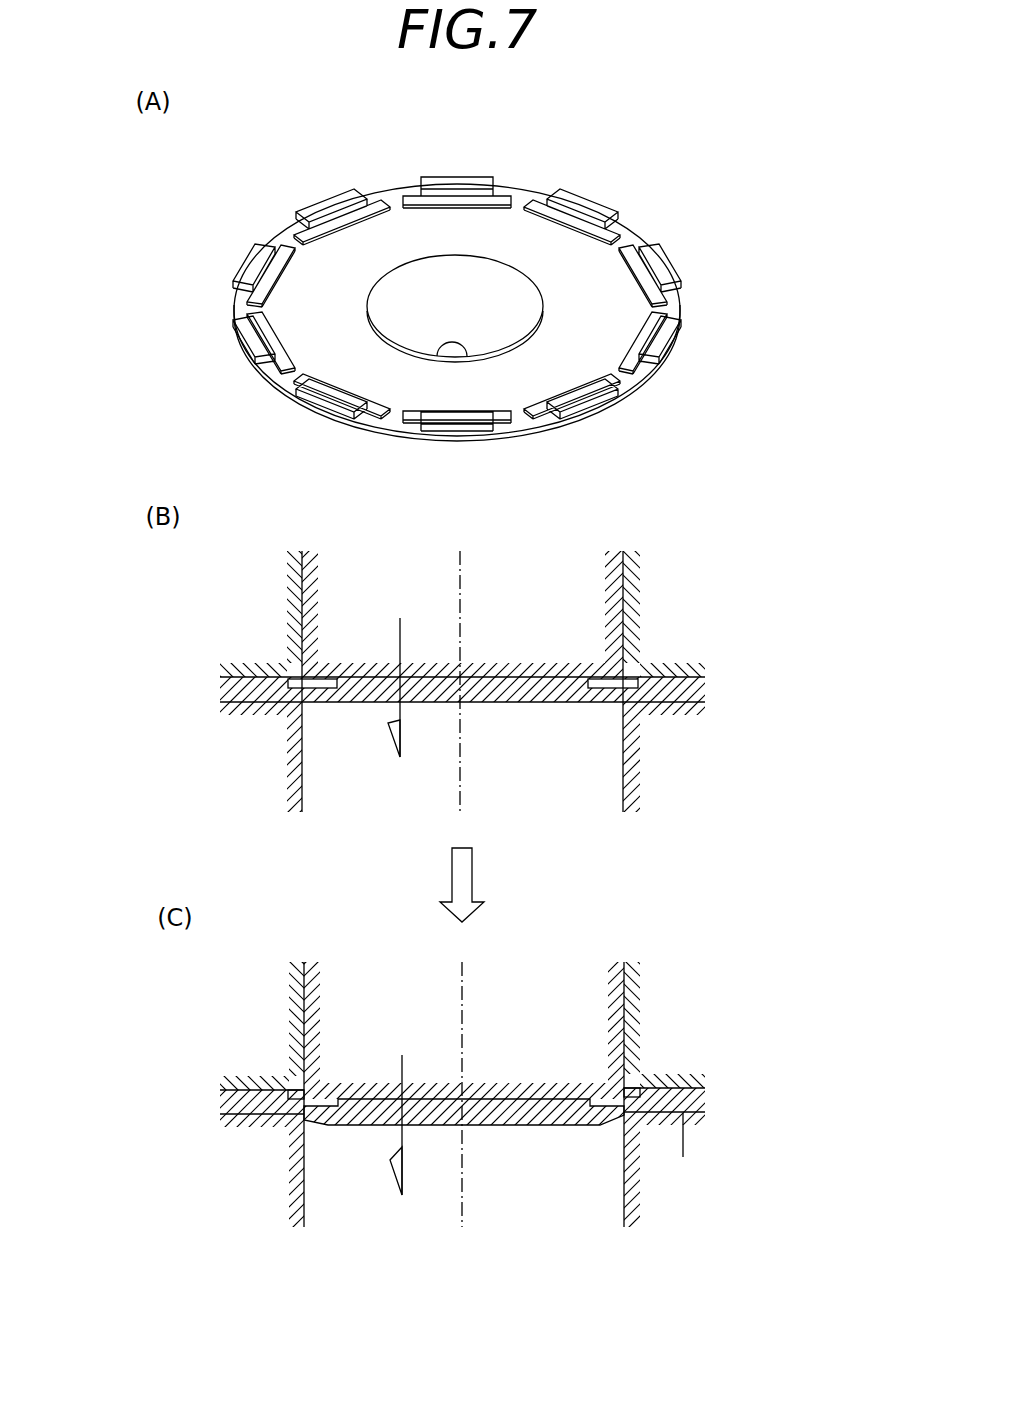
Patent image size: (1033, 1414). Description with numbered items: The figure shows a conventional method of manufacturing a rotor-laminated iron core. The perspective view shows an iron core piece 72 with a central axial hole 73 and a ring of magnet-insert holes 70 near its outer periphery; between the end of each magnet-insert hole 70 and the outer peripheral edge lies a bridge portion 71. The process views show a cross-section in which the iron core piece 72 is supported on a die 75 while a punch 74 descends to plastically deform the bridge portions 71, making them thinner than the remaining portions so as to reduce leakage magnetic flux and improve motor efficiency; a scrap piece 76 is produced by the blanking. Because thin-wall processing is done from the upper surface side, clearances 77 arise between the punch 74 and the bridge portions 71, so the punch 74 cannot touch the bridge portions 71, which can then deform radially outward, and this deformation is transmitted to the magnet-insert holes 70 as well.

The magnet-insert hole 70 is at (453, 203).
The bridge portion 71 is at (627, 230).
The iron core piece 72 is at (543, 235).
The axial hole 73 is at (468, 357).
The punch 74 is at (587, 590).
The die 75 is at (676, 766).
The scrap piece 76 is at (684, 1150).
The clearance 77 is at (290, 674).